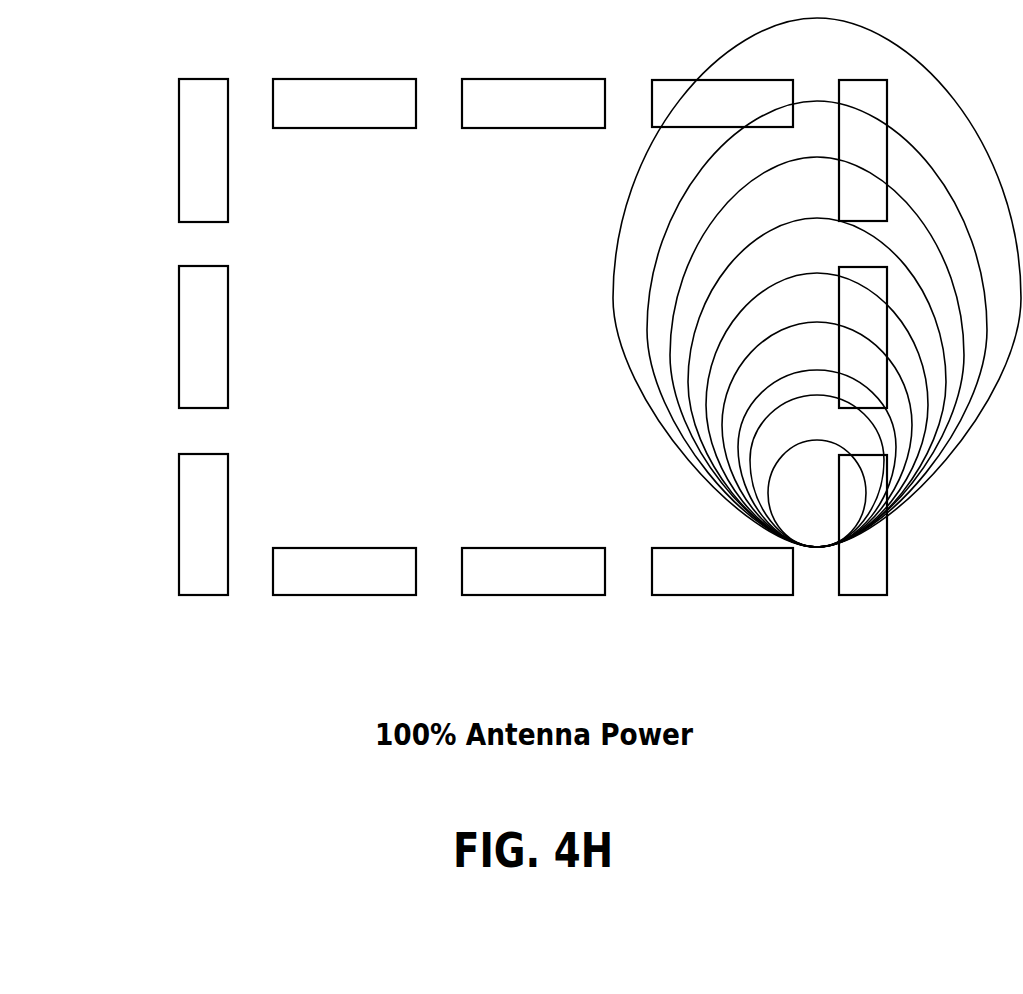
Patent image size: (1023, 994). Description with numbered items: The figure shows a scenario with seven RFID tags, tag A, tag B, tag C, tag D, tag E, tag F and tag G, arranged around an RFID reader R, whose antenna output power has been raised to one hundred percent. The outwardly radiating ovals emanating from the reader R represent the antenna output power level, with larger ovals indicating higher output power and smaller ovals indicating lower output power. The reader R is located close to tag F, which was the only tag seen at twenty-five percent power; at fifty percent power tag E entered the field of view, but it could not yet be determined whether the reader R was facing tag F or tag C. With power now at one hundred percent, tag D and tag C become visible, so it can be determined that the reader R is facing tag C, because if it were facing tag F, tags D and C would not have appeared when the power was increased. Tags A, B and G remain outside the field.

The tag A is at (344, 307).
The tag B is at (533, 307).
The tag C is at (722, 71).
The tag D is at (894, 150).
The tag E is at (897, 337).
The tag F is at (899, 525).
The tag G is at (722, 600).
The RFID reader R is at (817, 307).